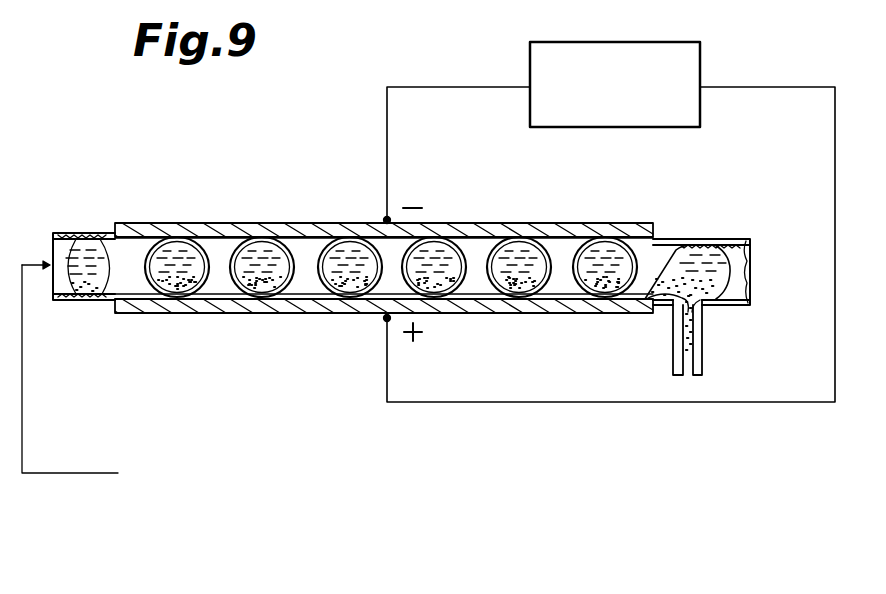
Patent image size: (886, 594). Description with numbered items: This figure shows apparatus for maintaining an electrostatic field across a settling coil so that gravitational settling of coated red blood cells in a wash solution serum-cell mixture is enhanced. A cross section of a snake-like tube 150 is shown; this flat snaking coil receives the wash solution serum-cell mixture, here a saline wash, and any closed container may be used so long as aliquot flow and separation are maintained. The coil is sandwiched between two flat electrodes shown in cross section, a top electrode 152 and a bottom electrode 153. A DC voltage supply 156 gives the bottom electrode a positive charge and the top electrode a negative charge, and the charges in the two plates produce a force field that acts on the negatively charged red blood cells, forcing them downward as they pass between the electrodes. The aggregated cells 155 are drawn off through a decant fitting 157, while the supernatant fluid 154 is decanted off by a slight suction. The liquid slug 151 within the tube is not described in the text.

The snake-like tube 150 is at (88, 232).
The wash solution slug 151 is at (66, 300).
The top electrode 152 is at (217, 223).
The bottom electrode 153 is at (149, 311).
The supernatant fluid 154 is at (677, 242).
The aggregated cells 155 is at (675, 302).
The DC voltage supply 156 is at (648, 42).
The decant fitting 157 is at (700, 335).